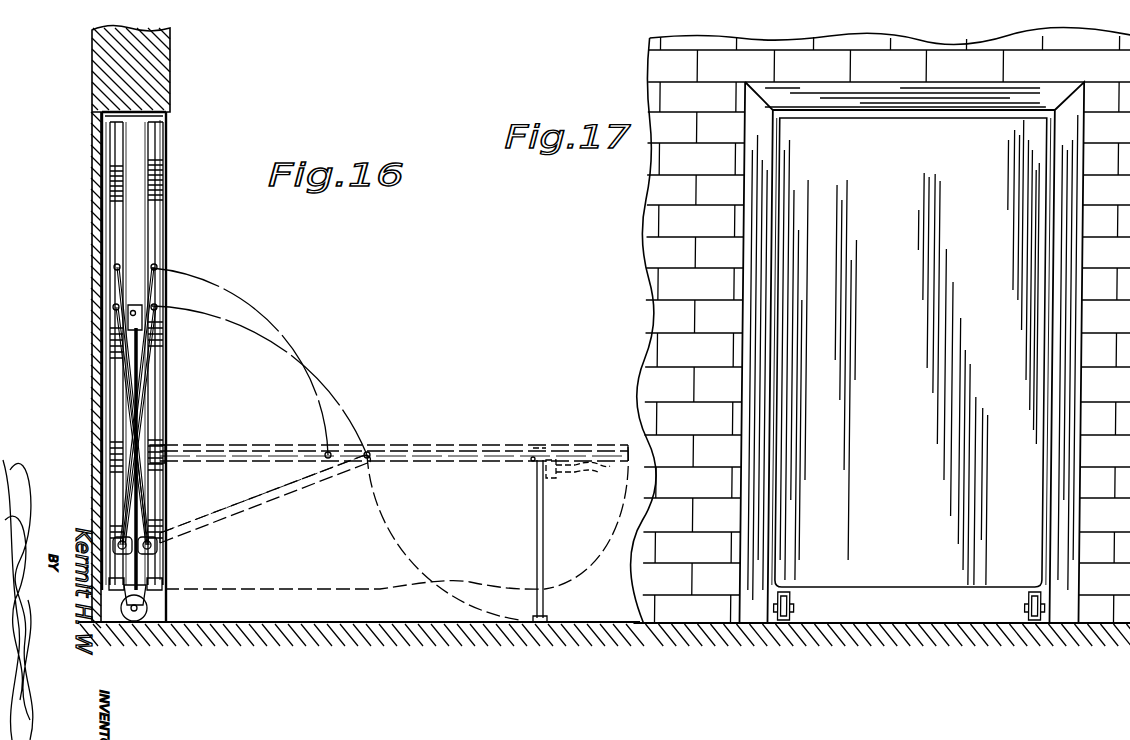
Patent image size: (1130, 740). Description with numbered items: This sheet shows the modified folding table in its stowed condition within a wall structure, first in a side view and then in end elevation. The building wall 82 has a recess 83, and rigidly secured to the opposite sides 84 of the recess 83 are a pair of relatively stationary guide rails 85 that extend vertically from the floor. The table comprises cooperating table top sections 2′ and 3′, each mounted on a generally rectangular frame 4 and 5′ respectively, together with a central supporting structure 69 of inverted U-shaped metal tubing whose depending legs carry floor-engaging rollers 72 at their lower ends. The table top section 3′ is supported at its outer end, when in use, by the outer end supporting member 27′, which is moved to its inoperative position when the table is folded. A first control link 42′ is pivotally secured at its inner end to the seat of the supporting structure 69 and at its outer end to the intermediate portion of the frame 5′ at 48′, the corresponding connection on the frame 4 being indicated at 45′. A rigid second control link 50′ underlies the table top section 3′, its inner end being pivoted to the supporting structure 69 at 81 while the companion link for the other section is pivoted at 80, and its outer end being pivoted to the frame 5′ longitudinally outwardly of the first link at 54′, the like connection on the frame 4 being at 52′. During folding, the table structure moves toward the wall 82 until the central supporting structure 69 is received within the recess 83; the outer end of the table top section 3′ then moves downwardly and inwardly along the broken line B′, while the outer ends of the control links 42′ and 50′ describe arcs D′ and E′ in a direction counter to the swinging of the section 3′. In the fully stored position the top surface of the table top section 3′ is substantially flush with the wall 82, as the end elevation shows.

In FIG. 16, the building wall 82 is at (170, 60).
In FIG. 17, the building wall 82 is at (706, 229).
In FIG. 16, the recess 83 is at (148, 117).
In FIG. 17, the recess 83 is at (923, 615).
In FIG. 16, the rectangular frame 4 is at (115, 184).
In FIG. 16, the rectangular frame 5′ is at (161, 185).
In FIG. 16, the opposite sides of the recess 84 is at (138, 216).
In FIG. 17, the opposite sides of the recess 84 is at (777, 553).
In FIG. 16, the table top section 2′ is at (103, 240).
In FIG. 16, the table top section 3′ is at (162, 233).
In FIG. 17, the table top section 3′ is at (904, 408).
In FIG. 16, the pivotal connection 45′ is at (114, 268).
In FIG. 16, the pivotal connection 48′ is at (157, 267).
In FIG. 16, the pivotal connection 52′ is at (113, 307).
In FIG. 16, the pivotal connection 54′ is at (157, 308).
In FIG. 16, the guide rails 85 is at (142, 342).
In FIG. 16, the arc D′ is at (243, 300).
In FIG. 16, the arc E′ is at (330, 390).
In FIG. 16, the first control link 42′ is at (242, 459).
In FIG. 16, the second control link 50′ is at (290, 490).
In FIG. 16, the outer end supporting member 27′ is at (531, 531).
In FIG. 16, the broken line B′ is at (486, 588).
In FIG. 16, the pivotal connection 80 is at (118, 542).
In FIG. 16, the pivotal connection 81 is at (152, 545).
In FIG. 16, the central supporting structure 69 is at (146, 568).
In FIG. 16, the rollers 72 is at (148, 607).
In FIG. 17, the rollers 72 is at (799, 604).